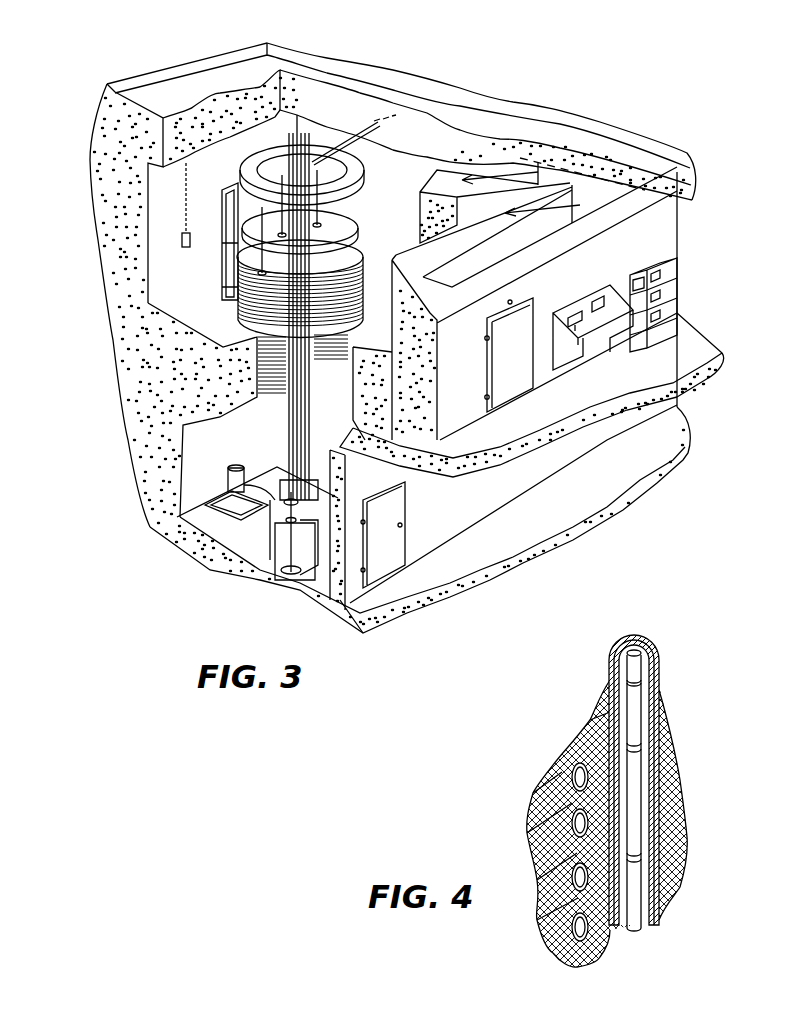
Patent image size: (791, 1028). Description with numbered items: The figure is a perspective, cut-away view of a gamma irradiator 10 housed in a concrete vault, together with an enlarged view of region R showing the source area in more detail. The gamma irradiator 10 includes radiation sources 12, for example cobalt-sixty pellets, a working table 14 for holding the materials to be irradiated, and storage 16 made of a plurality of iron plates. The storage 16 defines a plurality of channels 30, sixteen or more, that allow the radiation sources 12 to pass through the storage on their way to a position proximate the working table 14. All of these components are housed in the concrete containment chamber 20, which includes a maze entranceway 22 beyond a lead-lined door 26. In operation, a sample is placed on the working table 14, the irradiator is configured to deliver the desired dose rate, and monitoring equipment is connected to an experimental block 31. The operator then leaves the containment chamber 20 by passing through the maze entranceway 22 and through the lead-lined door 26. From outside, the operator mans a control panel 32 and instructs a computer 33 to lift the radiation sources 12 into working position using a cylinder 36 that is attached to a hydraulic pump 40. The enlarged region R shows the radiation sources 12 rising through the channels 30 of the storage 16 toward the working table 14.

In FIG. 3, the gamma irradiator 10 is at (560, 65).
In FIG. 4, the radiation sources 12 is at (632, 778).
In FIG. 3, the working table 14 is at (348, 222).
In FIG. 3, the storage 16 is at (233, 283).
In FIG. 3, the concrete containment chamber 20 is at (115, 178).
In FIG. 3, the maze entranceway 22 is at (605, 230).
In FIG. 3, the lead-lined door 26 is at (510, 368).
In FIG. 3, the channels 30 is at (285, 335).
In FIG. 3, the experimental block 31 is at (270, 213).
In FIG. 3, the control panel 32 is at (607, 327).
In FIG. 3, the computer 33 is at (673, 273).
In FIG. 3, the cylinder 36 is at (273, 563).
In FIG. 3, the hydraulic pump 40 is at (202, 506).
In FIG. 3, the region R is at (265, 345).